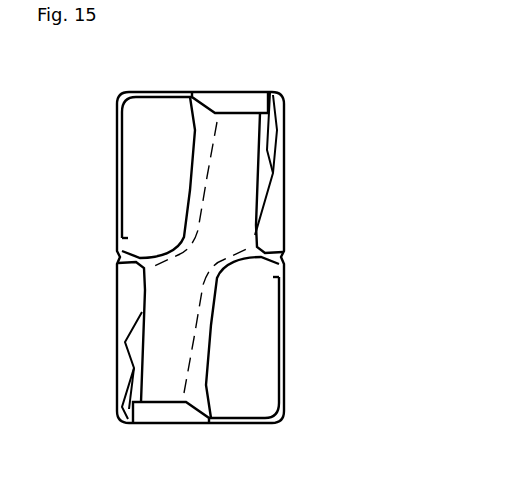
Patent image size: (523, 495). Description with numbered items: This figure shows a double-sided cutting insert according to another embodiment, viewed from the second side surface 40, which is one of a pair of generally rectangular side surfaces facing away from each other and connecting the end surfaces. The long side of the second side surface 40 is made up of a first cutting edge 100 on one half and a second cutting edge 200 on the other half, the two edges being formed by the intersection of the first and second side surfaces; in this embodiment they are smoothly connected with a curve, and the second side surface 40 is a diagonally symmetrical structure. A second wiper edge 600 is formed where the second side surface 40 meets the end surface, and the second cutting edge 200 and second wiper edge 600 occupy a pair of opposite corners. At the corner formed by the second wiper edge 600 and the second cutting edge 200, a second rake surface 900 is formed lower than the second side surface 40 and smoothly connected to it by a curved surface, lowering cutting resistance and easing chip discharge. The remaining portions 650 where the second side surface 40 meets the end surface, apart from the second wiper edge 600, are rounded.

The second side surface 40 is at (243, 120).
The first cutting edge 100 is at (130, 363).
The second cutting edge 200 is at (117, 155).
The second wiper edge 600 is at (242, 424).
The rounded portions 650 is at (153, 418).
The second rake surface 900 is at (157, 107).